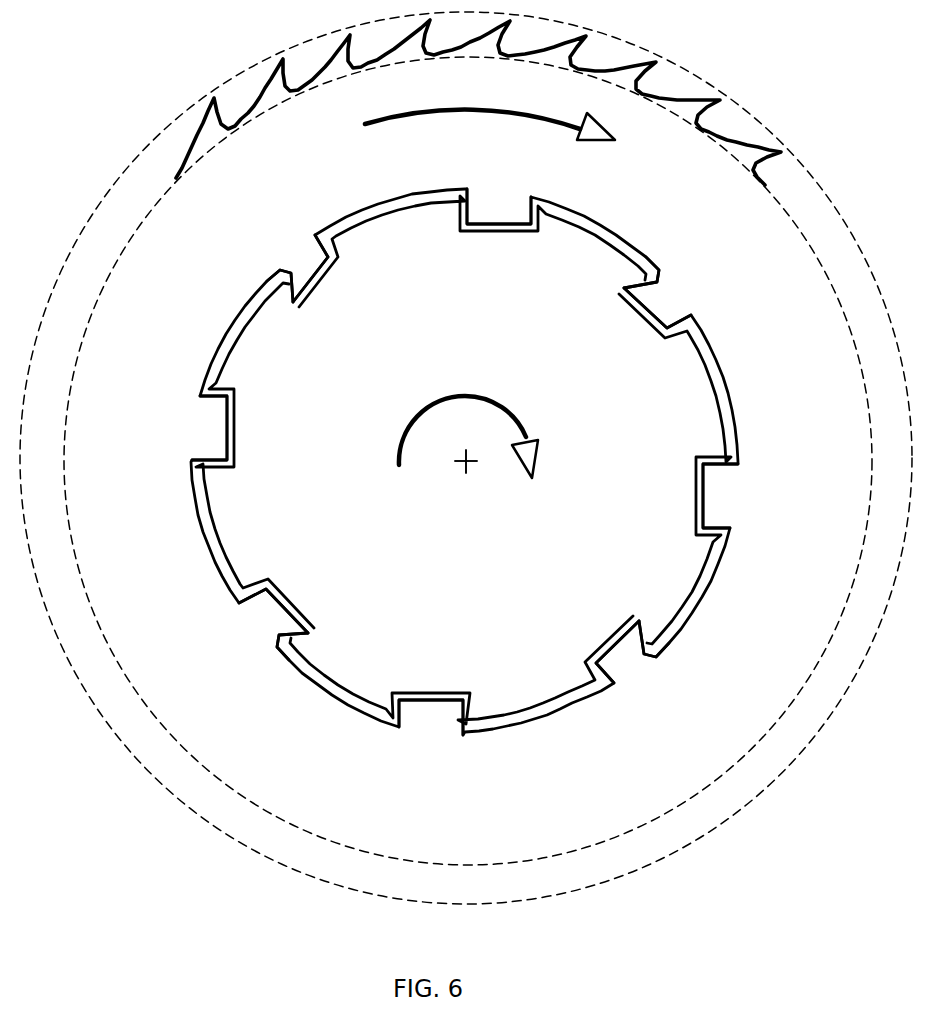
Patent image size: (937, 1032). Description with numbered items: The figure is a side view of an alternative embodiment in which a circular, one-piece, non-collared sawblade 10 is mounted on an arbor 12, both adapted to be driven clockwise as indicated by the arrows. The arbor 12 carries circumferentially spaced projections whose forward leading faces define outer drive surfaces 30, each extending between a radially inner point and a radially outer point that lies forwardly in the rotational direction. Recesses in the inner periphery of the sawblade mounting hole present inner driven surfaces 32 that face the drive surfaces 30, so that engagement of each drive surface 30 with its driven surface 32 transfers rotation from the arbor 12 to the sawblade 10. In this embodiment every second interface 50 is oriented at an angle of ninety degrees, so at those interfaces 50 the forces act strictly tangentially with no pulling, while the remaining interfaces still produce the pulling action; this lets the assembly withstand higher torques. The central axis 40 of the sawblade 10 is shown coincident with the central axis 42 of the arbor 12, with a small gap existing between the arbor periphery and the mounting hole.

The sawblade 10 is at (800, 382).
The arbor 12 is at (490, 587).
The drive surface 30 is at (632, 289).
The inner driven surface 32 is at (653, 274).
The central axis of the sawblade 40 is at (462, 468).
The central axis of the arbor 42 is at (468, 464).
The interface 50 is at (472, 204).